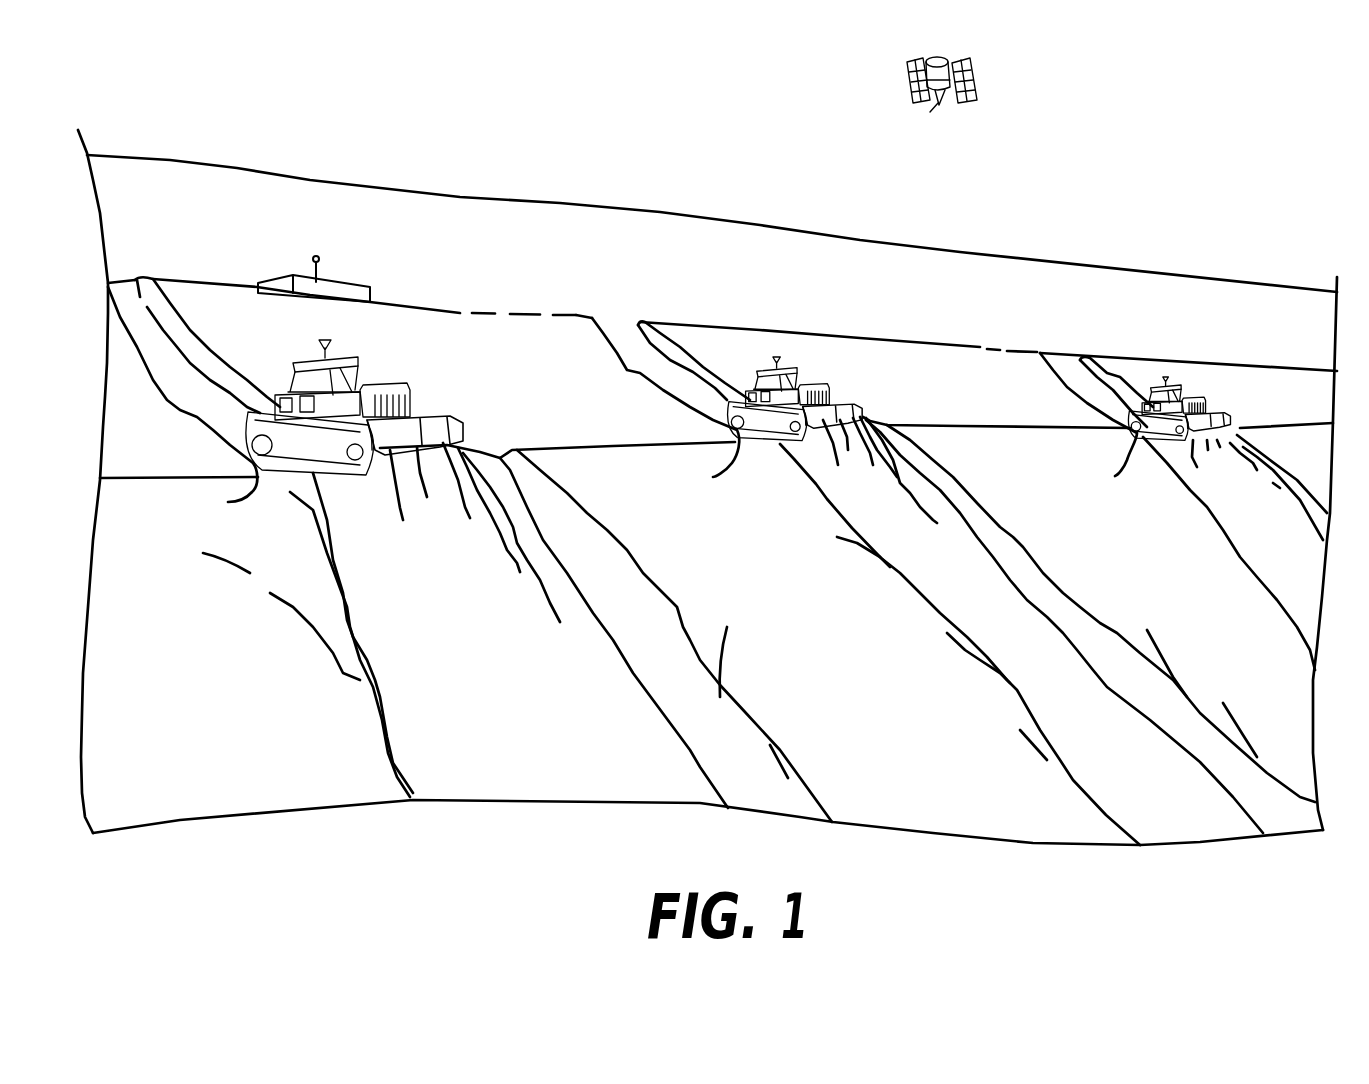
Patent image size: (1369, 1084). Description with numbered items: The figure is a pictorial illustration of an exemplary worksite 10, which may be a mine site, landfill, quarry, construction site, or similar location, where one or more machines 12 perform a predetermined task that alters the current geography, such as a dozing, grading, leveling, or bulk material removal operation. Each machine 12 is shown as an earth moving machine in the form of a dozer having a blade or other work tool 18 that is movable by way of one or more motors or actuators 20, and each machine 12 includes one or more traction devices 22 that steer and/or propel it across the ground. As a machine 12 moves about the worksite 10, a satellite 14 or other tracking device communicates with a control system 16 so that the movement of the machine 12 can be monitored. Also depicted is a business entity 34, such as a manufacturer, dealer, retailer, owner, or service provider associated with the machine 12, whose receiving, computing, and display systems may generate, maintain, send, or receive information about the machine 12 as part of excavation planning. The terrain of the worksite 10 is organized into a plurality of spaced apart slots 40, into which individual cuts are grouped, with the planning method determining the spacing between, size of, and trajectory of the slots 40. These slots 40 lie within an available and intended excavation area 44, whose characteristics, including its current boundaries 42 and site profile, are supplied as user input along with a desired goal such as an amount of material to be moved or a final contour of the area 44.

The worksite 10 is at (1099, 195).
The machine 12 is at (347, 362).
The satellite 14 is at (978, 77).
The control system 16 is at (447, 403).
The work tool 18 is at (447, 423).
The actuator 20 is at (357, 407).
The traction device 22 is at (622, 405).
The business entity 34 is at (350, 291).
The slot 40 is at (173, 370).
The boundary 42 is at (953, 348).
The excavation area 44 is at (1009, 414).